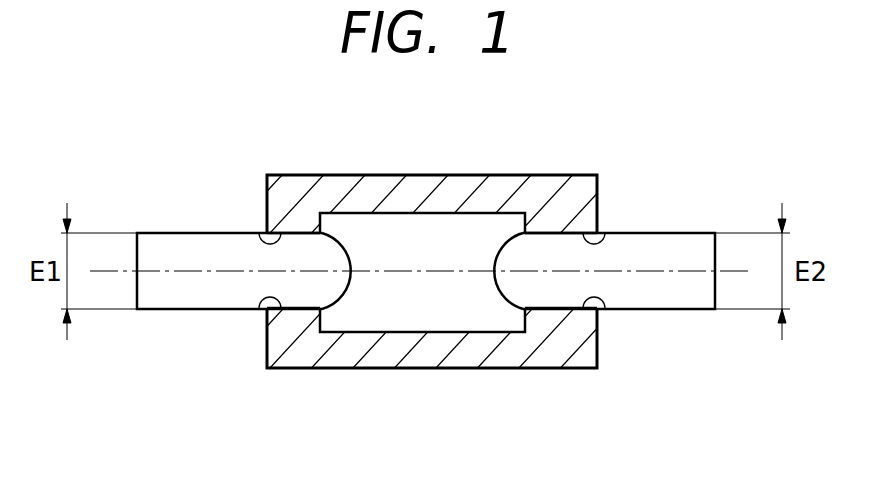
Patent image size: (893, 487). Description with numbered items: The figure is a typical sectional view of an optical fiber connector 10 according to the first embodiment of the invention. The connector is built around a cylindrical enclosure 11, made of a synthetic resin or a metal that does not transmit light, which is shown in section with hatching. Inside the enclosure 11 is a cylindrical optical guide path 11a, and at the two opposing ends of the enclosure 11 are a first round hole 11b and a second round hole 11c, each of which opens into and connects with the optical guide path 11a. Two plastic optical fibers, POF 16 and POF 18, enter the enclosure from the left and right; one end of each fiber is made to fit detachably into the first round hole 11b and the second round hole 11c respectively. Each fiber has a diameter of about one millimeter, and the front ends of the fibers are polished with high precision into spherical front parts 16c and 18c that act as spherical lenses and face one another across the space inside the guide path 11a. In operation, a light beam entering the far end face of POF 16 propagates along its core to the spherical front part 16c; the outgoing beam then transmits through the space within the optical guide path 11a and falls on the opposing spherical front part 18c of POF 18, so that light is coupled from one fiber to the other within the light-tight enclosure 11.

The optical fiber connector 10 is at (462, 146).
The cylindrical enclosure 11 is at (555, 177).
The cylindrical optical guide path 11a is at (452, 332).
The first round hole 11b is at (262, 242).
The second round hole 11c is at (599, 241).
The plastic fiber (POF) 16 is at (197, 307).
The spherical front part 16c is at (349, 288).
The plastic fiber (POF) 18 is at (652, 302).
The spherical front part 18c is at (497, 290).